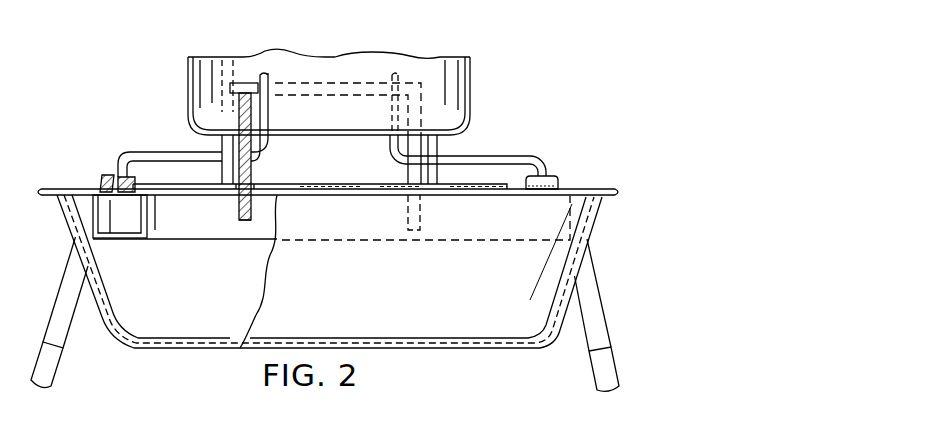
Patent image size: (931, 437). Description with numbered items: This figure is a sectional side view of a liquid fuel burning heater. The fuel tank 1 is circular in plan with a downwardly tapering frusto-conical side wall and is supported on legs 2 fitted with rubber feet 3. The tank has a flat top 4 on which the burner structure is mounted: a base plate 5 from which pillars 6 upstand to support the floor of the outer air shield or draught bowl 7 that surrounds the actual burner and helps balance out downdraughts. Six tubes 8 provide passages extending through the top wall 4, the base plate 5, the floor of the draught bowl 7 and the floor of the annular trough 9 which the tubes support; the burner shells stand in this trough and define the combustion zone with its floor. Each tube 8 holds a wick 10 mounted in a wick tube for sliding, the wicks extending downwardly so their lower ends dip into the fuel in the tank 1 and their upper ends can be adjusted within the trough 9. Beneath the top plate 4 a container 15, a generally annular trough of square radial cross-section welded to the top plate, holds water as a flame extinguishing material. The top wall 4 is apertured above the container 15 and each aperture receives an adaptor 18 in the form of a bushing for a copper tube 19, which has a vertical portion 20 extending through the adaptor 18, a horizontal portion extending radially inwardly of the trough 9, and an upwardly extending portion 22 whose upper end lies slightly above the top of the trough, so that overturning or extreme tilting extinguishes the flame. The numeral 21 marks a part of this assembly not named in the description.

The fuel tank 1 is at (137, 328).
The legs 2 is at (60, 307).
The rubber feet 3 is at (58, 363).
The flat top 4 is at (65, 189).
The base plate 5 is at (205, 193).
The pillars 6 is at (228, 175).
The outer air shield or draught bowl 7 is at (171, 167).
The tubes 8 is at (253, 177).
The annular trough 9 is at (290, 92).
The wick 10 is at (247, 210).
The container 15 is at (121, 229).
The adaptor 18 is at (106, 176).
The tube 19 is at (149, 151).
The vertical portion 20 is at (130, 179).
The rail strip 21 is at (192, 158).
The upwardly extending portion 22 is at (269, 116).